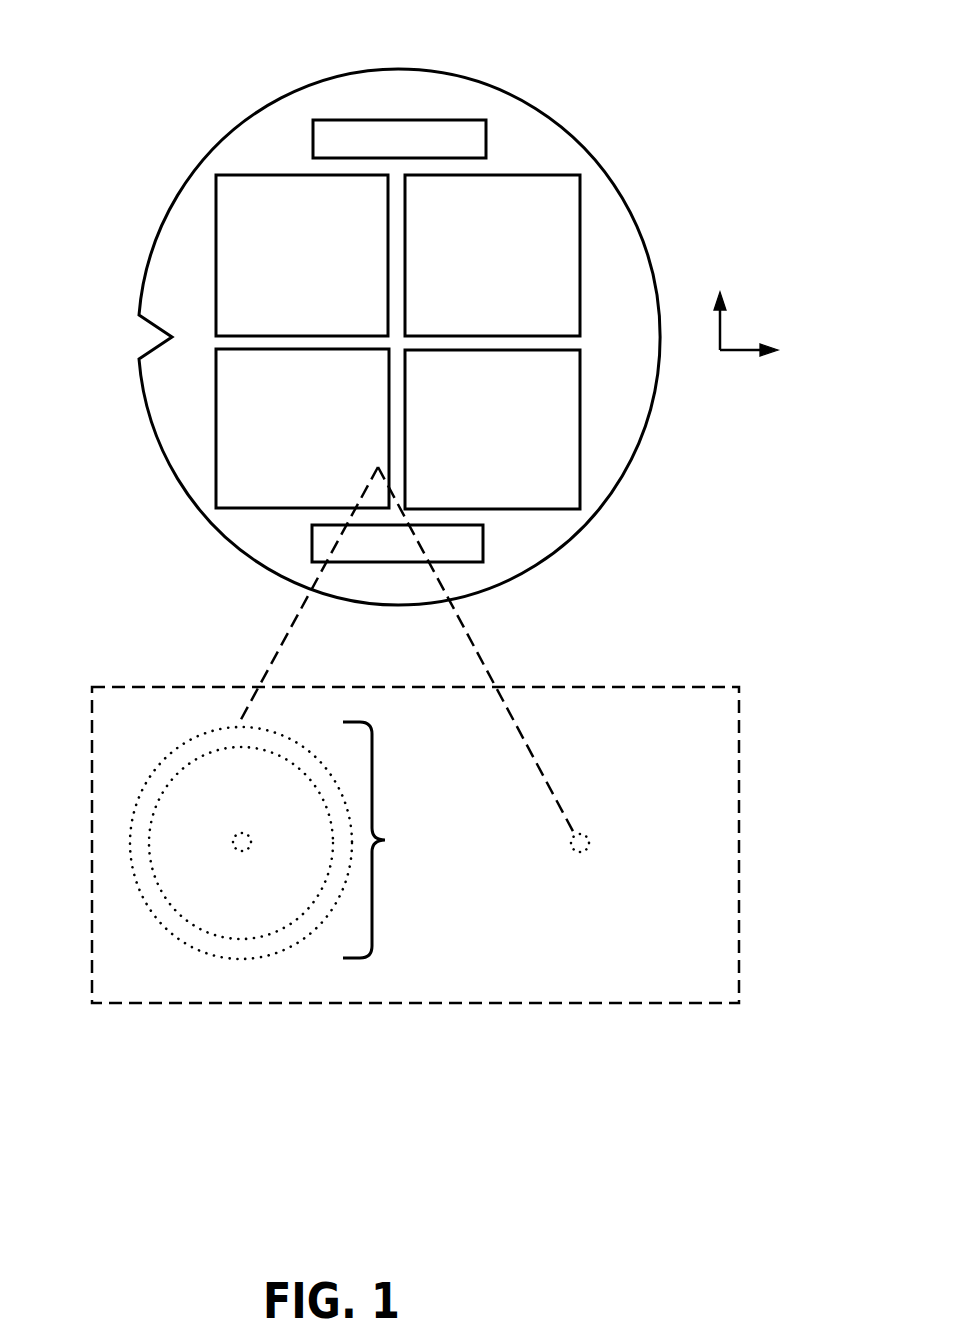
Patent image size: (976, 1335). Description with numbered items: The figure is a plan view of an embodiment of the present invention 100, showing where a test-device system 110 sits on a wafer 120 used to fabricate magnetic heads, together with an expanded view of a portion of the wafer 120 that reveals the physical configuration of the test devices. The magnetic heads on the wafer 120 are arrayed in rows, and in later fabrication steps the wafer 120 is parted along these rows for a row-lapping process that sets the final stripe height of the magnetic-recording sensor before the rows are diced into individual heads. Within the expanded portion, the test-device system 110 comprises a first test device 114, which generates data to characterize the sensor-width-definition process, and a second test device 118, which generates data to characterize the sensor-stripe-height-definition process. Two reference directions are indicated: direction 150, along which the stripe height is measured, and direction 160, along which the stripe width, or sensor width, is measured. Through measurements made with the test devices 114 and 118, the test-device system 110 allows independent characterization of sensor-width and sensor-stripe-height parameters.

The embodiment of the present invention 100 is at (115, 93).
The test-device system 110 is at (115, 717).
The first test device 114 is at (385, 840).
The second test device 118 is at (587, 835).
The wafer 120 is at (622, 223).
The direction 150 is at (717, 306).
The direction 160 is at (773, 347).